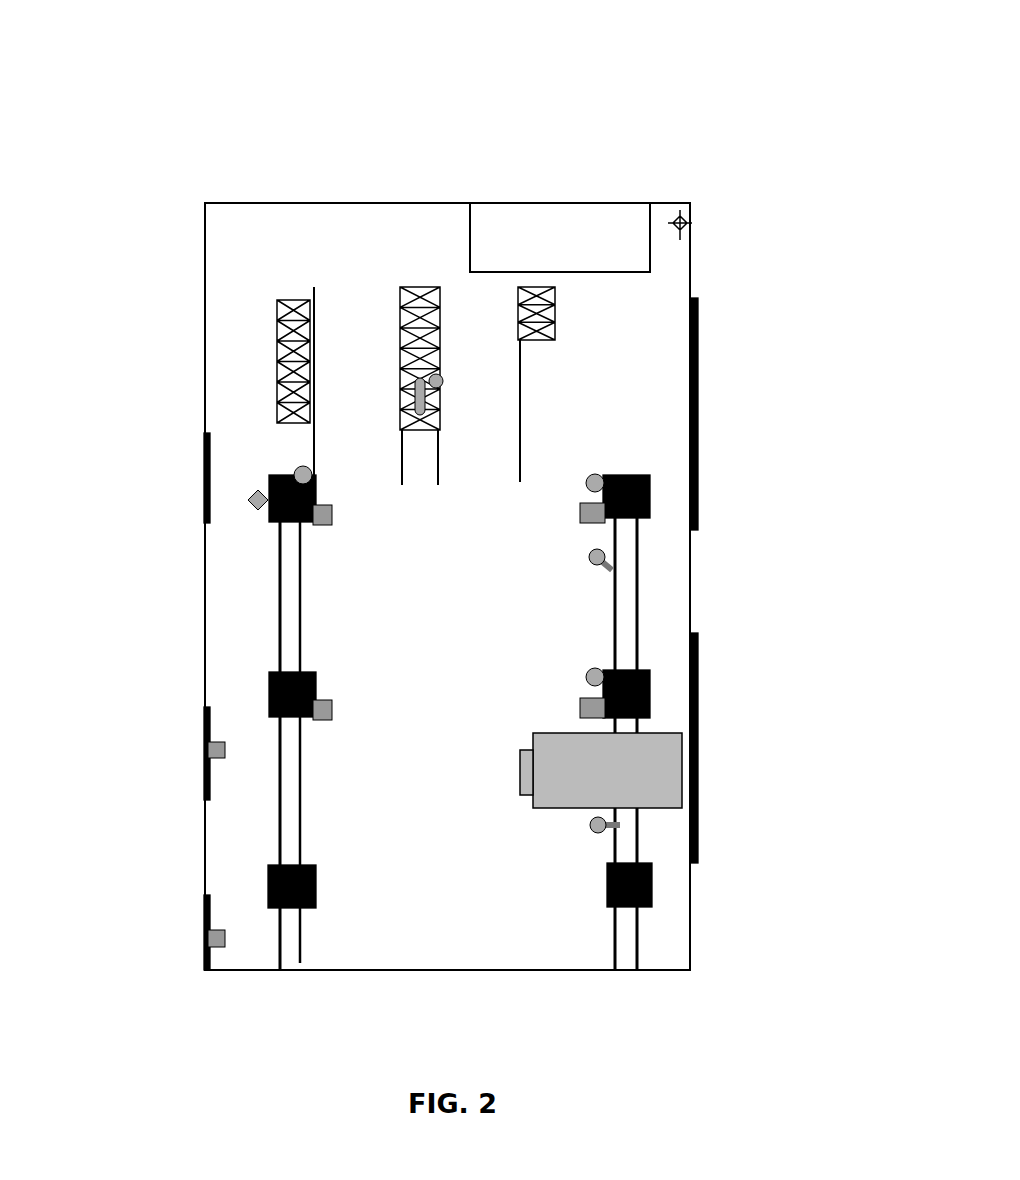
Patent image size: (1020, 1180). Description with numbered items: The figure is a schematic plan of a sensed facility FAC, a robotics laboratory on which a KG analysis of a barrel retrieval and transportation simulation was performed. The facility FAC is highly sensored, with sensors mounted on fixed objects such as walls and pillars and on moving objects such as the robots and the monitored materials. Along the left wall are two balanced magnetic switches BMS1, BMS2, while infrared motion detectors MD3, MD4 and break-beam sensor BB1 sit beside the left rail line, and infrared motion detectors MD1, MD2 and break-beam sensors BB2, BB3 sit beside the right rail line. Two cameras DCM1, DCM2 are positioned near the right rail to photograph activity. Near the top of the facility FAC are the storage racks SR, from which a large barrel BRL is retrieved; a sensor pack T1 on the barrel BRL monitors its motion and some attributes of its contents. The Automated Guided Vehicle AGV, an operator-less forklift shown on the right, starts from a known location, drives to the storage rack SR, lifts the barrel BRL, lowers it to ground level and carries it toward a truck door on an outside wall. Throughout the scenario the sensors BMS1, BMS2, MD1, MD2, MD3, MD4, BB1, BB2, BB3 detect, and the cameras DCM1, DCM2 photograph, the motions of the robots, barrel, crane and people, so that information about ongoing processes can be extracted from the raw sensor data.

The facility FAC is at (570, 133).
The storage racks SR is at (410, 287).
The barrel BRL is at (400, 390).
The sensor pack T1 is at (436, 381).
The infrared motion detector MD1 is at (608, 668).
The infrared motion detector MD2 is at (605, 478).
The infrared motion detector MD3 is at (298, 470).
The infrared motion detector MD4 is at (250, 500).
The break-beam sensor BB1 is at (313, 515).
The break-beam sensor BB2 is at (650, 720).
The break-beam sensor BB3 is at (630, 521).
The camera DCM1 is at (635, 827).
The camera DCM2 is at (615, 570).
The Automated Guided Vehicle AGV is at (698, 775).
The balanced magnetic switch BMS1 is at (207, 940).
The balanced magnetic switch BMS2 is at (207, 750).